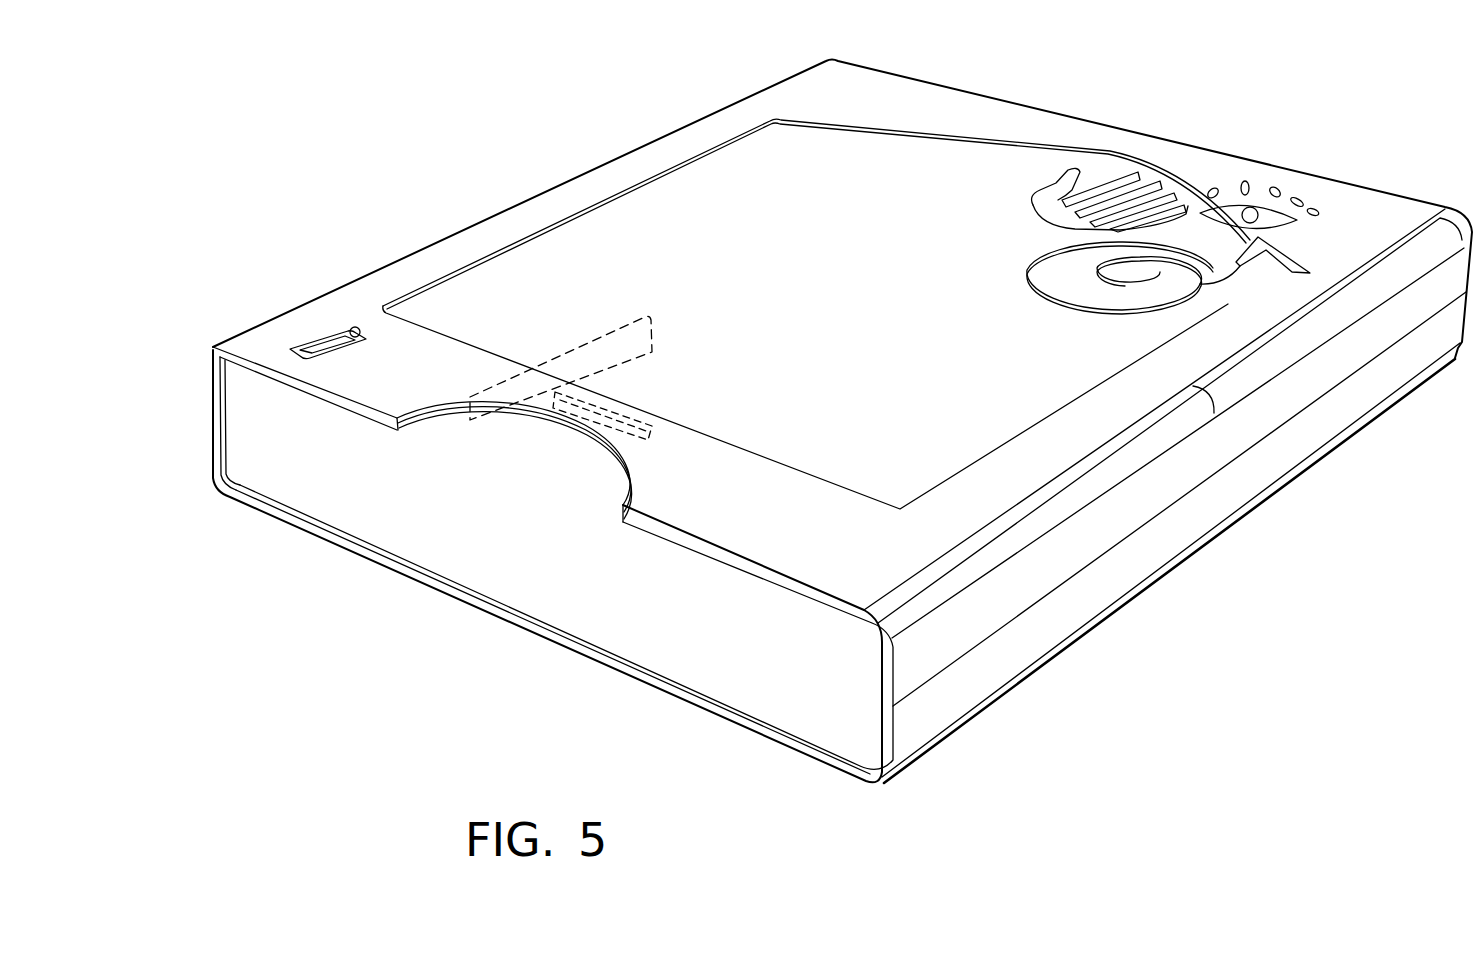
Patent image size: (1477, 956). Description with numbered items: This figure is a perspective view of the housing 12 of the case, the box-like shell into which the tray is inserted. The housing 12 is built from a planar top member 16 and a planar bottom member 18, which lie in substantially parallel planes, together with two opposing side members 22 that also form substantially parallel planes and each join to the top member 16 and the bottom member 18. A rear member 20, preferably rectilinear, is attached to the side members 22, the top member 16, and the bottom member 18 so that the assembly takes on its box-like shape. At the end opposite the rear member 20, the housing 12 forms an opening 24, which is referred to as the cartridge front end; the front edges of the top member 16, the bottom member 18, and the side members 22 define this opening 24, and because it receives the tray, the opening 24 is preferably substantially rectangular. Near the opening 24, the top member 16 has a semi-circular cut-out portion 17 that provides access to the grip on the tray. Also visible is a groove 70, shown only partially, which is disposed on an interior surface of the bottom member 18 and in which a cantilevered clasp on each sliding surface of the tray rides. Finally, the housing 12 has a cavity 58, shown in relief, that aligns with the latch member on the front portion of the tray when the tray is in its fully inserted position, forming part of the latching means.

The housing 12 is at (1141, 638).
The planar top member 16 is at (700, 237).
The semi-circular cut-out portion 17 is at (435, 416).
The planar bottom member 18 is at (651, 624).
The rear member 20 is at (1078, 118).
The side members 22 is at (254, 408).
The opening 24 is at (787, 663).
The cavity 58 is at (643, 412).
The groove 70 is at (483, 423).